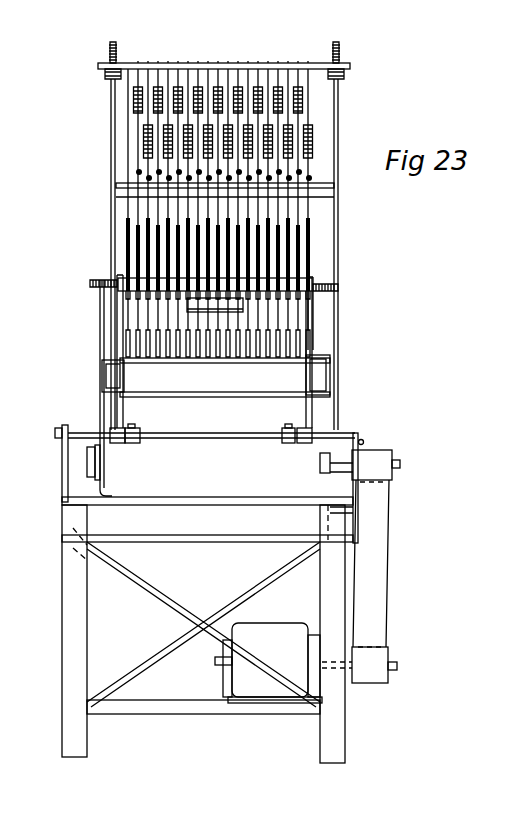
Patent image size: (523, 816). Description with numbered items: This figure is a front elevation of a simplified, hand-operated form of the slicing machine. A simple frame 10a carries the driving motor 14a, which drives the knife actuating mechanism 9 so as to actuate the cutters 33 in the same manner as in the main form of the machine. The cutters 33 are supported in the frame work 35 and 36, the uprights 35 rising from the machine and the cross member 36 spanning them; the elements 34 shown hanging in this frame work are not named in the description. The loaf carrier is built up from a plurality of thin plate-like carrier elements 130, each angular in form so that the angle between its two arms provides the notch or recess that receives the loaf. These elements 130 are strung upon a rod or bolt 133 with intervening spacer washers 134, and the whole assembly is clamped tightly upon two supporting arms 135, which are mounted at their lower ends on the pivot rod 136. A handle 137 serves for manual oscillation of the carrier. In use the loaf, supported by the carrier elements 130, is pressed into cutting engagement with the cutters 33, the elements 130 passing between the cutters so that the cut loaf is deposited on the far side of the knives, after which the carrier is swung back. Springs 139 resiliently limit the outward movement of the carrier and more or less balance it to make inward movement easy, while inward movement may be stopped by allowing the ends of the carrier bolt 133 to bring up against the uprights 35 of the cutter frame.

The knife actuating mechanism 9 is at (225, 407).
The frame 10a is at (89, 633).
The driving motor 14a is at (268, 663).
The cutters 33 is at (225, 210).
The springs 34 is at (138, 138).
The uprights of cutter frame 35 is at (110, 100).
The frame work 36 is at (250, 66).
The carrier elements 130 is at (288, 258).
The carrier rod or bolt 133 is at (114, 283).
The spacer washers 134 is at (124, 276).
The supporting arms 135 is at (124, 408).
The pivot rod 136 is at (201, 438).
The handle 137 is at (209, 355).
The springs 139 is at (104, 336).